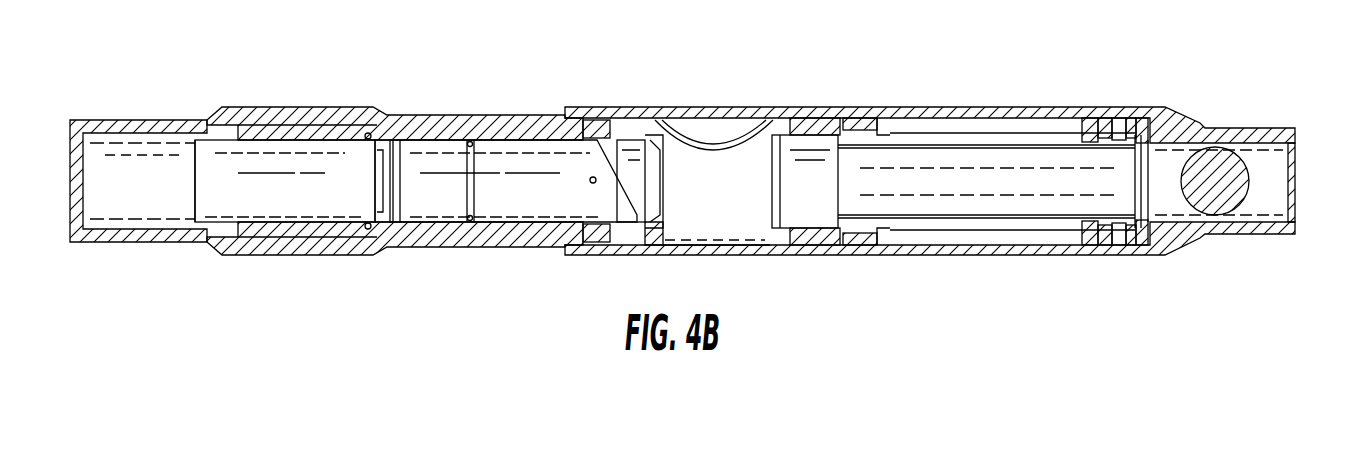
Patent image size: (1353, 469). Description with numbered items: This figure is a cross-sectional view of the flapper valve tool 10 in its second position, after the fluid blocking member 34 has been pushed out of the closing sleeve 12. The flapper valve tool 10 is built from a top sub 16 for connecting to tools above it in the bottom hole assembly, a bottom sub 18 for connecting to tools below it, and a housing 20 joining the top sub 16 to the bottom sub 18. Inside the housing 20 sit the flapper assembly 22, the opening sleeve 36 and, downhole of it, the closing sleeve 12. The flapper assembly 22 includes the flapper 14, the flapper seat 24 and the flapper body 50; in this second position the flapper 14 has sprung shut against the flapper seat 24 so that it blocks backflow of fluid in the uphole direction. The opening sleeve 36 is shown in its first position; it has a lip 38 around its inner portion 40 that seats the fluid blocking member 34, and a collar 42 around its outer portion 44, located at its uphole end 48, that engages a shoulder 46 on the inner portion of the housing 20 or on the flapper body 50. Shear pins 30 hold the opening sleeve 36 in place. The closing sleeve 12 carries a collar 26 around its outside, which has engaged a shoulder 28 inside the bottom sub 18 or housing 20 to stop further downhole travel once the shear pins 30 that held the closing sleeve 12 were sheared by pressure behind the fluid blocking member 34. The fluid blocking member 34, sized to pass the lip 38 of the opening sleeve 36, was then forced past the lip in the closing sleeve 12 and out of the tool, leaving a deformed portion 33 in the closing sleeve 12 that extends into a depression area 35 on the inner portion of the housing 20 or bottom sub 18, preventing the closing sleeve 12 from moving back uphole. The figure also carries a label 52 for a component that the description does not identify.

The flapper valve tool 10 is at (996, 34).
The closing sleeve 12 is at (1022, 192).
The flapper 14 is at (672, 155).
The top sub 16 is at (157, 120).
The bottom sub 18 is at (1162, 118).
The housing 20 is at (300, 107).
The flapper assembly 22 is at (622, 257).
The flapper seat 24 is at (653, 220).
The collar 26 is at (1077, 240).
The shoulder 28 is at (1086, 118).
The shear pins 30 is at (868, 118).
The deformed portion 33 is at (1132, 126).
The fluid blocking member 34 is at (1258, 178).
The depression area 35 is at (1148, 127).
The opening sleeve 36 is at (423, 163).
The lip 38 is at (479, 170).
The inner portion 40 is at (536, 150).
The collar 42 is at (425, 244).
The outer portion 44 is at (455, 244).
The shoulder 46 is at (607, 213).
The uphole end 48 is at (377, 178).
The flapper body 50 is at (790, 118).
The spacer 52 is at (606, 138).